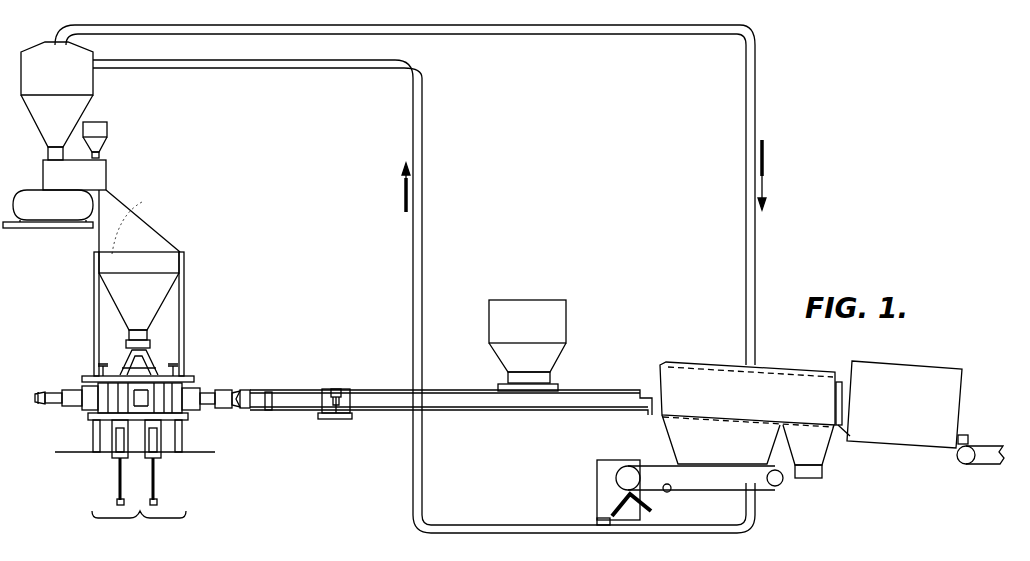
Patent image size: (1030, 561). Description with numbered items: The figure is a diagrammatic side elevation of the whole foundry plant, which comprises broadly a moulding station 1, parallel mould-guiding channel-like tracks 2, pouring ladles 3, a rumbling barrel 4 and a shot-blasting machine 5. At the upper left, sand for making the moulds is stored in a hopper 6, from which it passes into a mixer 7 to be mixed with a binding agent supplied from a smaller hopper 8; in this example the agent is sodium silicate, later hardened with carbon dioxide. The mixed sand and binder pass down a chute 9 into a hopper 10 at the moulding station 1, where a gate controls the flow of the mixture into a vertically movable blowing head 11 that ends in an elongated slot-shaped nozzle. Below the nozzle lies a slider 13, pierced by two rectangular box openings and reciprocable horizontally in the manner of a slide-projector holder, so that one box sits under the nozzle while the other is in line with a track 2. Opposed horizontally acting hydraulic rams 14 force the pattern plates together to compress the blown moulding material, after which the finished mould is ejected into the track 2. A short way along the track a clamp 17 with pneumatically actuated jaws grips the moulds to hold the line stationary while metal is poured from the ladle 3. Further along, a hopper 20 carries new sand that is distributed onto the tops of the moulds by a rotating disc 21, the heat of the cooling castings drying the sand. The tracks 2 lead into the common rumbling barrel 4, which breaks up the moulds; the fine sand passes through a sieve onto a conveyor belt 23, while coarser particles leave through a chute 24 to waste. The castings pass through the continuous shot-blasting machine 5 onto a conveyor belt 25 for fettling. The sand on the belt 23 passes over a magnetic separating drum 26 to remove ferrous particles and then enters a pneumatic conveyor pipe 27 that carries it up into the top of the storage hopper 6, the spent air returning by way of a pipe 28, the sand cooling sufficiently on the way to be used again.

The moulding station 1 is at (135, 466).
The mould-guiding channel-like tracks 2 is at (295, 392).
The pouring ladle 3 is at (343, 389).
The rumbling barrel 4 is at (722, 400).
The shot-blasting machine 5 is at (902, 432).
The hopper 6 is at (49, 86).
The mixer 7 is at (62, 188).
The hopper 8 is at (110, 131).
The chute 9 is at (114, 243).
The hopper 10 is at (126, 306).
The blowing head 11 is at (145, 367).
The slider 13 is at (138, 398).
The hydraulic rams 14 is at (81, 396).
The clamp 17 is at (272, 404).
The hopper 20 is at (513, 334).
The rotating disc 21 is at (558, 388).
The conveyor belt 23 is at (707, 468).
The chute 24 is at (808, 470).
The conveyor belt 25 is at (977, 452).
The magnetic separating drum 26 is at (620, 483).
The pipe 27 is at (477, 528).
The pipe 28 is at (422, 170).